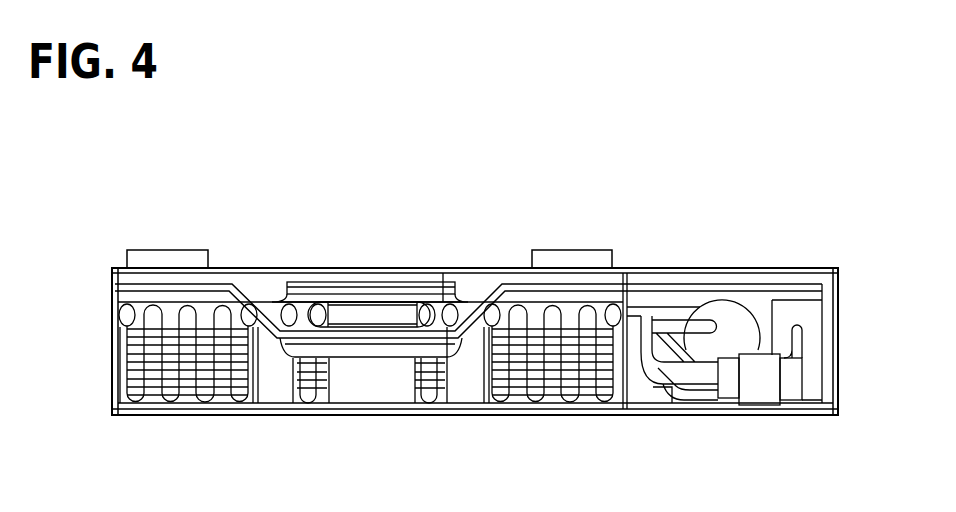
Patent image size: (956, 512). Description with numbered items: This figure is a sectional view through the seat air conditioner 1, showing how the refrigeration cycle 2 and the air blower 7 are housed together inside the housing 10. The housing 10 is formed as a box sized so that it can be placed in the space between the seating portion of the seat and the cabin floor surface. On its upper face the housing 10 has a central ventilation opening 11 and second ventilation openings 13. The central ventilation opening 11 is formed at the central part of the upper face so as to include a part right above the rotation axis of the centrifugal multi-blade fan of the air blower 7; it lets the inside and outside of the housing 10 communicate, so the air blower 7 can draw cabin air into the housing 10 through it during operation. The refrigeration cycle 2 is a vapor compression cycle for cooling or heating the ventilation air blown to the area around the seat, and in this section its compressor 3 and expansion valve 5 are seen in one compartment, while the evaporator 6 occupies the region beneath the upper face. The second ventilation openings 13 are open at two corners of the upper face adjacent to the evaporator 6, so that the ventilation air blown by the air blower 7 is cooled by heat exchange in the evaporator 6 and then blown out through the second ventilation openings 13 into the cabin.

The seat air conditioner 1 is at (808, 173).
The refrigeration cycle 2 is at (676, 299).
The compressor 3 is at (743, 332).
The expansion valve 5 is at (793, 392).
The evaporator 6 is at (207, 367).
The air blower 7 is at (404, 265).
The housing 10 is at (805, 267).
The central ventilation opening 11 is at (298, 282).
The second ventilation opening 13 is at (155, 250).